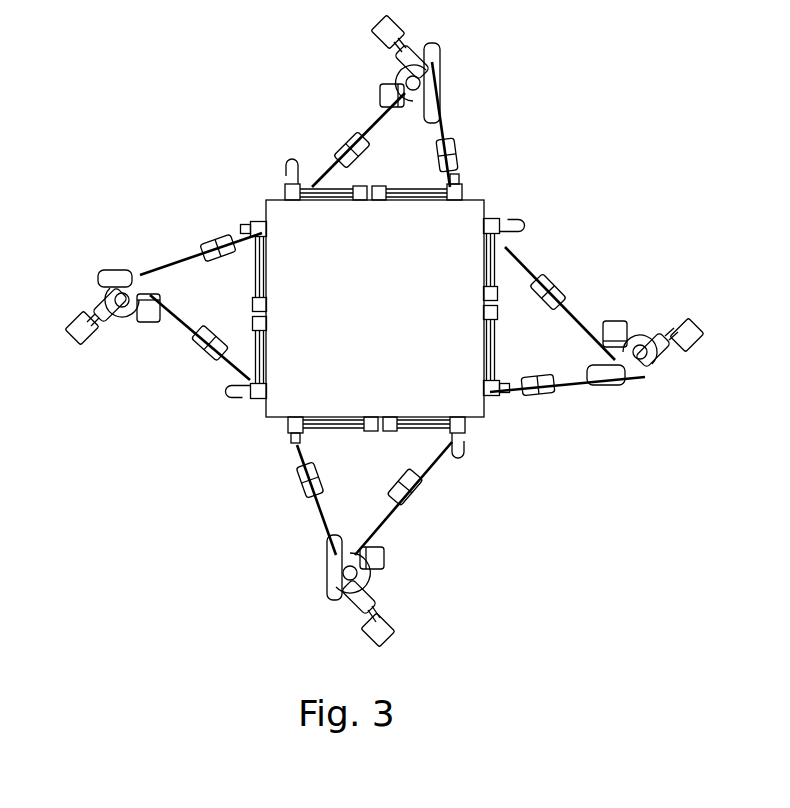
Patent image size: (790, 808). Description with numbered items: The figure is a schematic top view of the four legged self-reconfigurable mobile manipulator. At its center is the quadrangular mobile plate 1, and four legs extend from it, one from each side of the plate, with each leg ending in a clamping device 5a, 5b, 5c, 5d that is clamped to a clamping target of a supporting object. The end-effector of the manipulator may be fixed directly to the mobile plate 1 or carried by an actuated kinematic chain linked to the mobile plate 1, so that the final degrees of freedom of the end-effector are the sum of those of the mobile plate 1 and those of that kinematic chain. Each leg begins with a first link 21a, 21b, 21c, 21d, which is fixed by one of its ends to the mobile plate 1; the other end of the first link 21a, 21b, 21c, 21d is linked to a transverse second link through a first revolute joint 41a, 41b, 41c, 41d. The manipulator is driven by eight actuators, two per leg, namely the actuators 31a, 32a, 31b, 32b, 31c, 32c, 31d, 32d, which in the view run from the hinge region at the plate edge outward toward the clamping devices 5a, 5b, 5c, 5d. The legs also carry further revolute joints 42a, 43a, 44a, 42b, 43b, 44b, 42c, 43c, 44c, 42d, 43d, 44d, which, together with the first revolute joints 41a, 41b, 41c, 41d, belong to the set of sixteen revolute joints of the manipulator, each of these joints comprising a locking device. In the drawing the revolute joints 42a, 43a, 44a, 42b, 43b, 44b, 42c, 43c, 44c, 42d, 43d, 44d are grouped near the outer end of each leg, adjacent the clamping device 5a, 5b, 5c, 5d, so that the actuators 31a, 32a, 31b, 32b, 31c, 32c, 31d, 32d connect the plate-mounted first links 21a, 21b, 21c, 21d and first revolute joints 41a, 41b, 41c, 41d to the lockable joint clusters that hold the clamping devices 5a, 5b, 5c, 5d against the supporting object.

The quadrangular mobile plate 1 is at (460, 247).
The first link 21a is at (377, 420).
The first link 21b is at (497, 307).
The first link 21c is at (378, 197).
The first link 21d is at (258, 305).
The first revolute joint 41a is at (393, 428).
The first revolute joint 41b is at (492, 290).
The first revolute joint 41c is at (367, 193).
The first revolute joint 41d is at (252, 327).
The actuator 31a is at (303, 485).
The actuator 31b is at (543, 393).
The actuator 31c is at (457, 147).
The actuator 31d is at (207, 242).
The actuator 32a is at (417, 497).
The actuator 32b is at (557, 285).
The actuator 32c is at (342, 138).
The actuator 32d is at (202, 357).
The revolute joint 42a is at (327, 562).
The revolute joint 42b is at (605, 388).
The revolute joint 42c is at (443, 100).
The revolute joint 42d is at (150, 272).
The revolute joint 43a is at (386, 562).
The revolute joint 43b is at (612, 321).
The revolute joint 43c is at (380, 92).
The revolute joint 43d is at (145, 325).
The revolute joint 44a is at (350, 605).
The revolute joint 44b is at (655, 337).
The revolute joint 44c is at (398, 62).
The revolute joint 44d is at (95, 297).
The clamping device 5a is at (392, 628).
The clamping device 5b is at (690, 350).
The clamping device 5c is at (374, 30).
The clamping device 5d is at (80, 343).